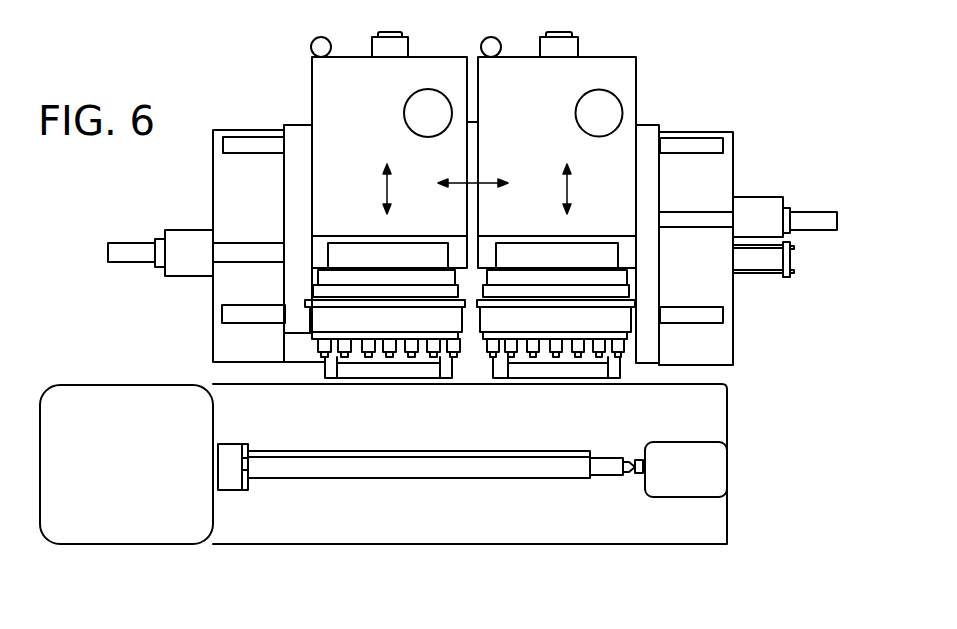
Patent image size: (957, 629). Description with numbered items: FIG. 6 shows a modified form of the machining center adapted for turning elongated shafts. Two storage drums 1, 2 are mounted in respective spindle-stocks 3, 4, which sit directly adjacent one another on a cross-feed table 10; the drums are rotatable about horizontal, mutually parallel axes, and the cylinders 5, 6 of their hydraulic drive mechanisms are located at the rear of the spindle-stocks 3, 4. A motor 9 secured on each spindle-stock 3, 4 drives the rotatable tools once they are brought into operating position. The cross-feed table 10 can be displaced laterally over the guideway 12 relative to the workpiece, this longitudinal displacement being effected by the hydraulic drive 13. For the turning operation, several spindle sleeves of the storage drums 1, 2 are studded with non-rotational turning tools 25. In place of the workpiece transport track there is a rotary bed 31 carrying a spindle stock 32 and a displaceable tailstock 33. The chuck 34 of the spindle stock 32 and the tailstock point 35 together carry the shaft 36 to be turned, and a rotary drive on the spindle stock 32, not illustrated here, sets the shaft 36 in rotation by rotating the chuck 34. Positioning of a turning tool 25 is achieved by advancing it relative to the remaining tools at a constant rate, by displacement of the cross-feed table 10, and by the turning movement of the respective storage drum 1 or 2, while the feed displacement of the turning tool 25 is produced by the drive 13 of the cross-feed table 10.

The storage drum 1 is at (317, 322).
The storage drum 2 is at (623, 318).
The spindle-stock 3 is at (325, 93).
The spindle-stock 4 is at (627, 80).
The cylinder 5 is at (327, 38).
The cylinder 6 is at (497, 43).
The motor 9 is at (428, 97).
The cross-feed table 10 is at (647, 137).
The guideway 12 is at (237, 143).
The hydraulic drive 13 is at (770, 267).
The turning tool 25 is at (598, 358).
The rotary bed 31 is at (582, 532).
The spindle stock 32 is at (115, 527).
The tailstock 33 is at (720, 478).
The chuck 34 is at (233, 483).
The tailstock point 35 is at (643, 474).
The shaft 36 is at (473, 474).